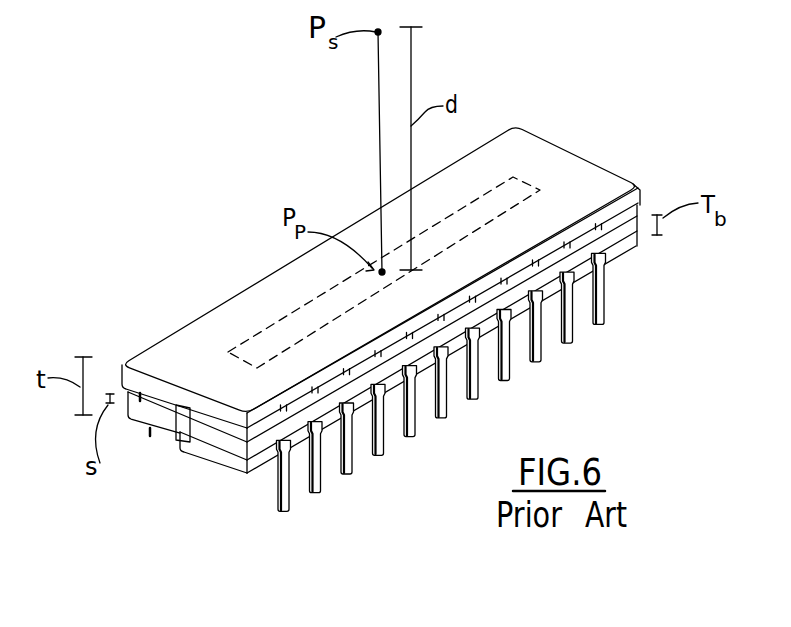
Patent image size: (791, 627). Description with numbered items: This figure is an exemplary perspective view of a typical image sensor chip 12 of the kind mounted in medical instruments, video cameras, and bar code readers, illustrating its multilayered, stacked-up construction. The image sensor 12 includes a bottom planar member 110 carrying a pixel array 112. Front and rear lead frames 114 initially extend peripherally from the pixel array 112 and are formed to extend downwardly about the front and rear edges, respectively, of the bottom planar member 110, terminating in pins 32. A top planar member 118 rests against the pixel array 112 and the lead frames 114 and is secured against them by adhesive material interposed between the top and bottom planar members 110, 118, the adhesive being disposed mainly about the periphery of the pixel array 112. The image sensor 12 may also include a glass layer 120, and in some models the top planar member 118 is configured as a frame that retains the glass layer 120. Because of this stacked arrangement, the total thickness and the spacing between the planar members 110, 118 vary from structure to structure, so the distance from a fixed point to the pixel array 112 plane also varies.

The image sensor chip 12 is at (212, 186).
The pins 32 is at (531, 352).
The bottom planar member 110 is at (620, 246).
The pixel array 112 is at (230, 352).
The lead frames 114 is at (263, 486).
The top planar member 118 is at (643, 206).
The glass layer 120 is at (140, 370).